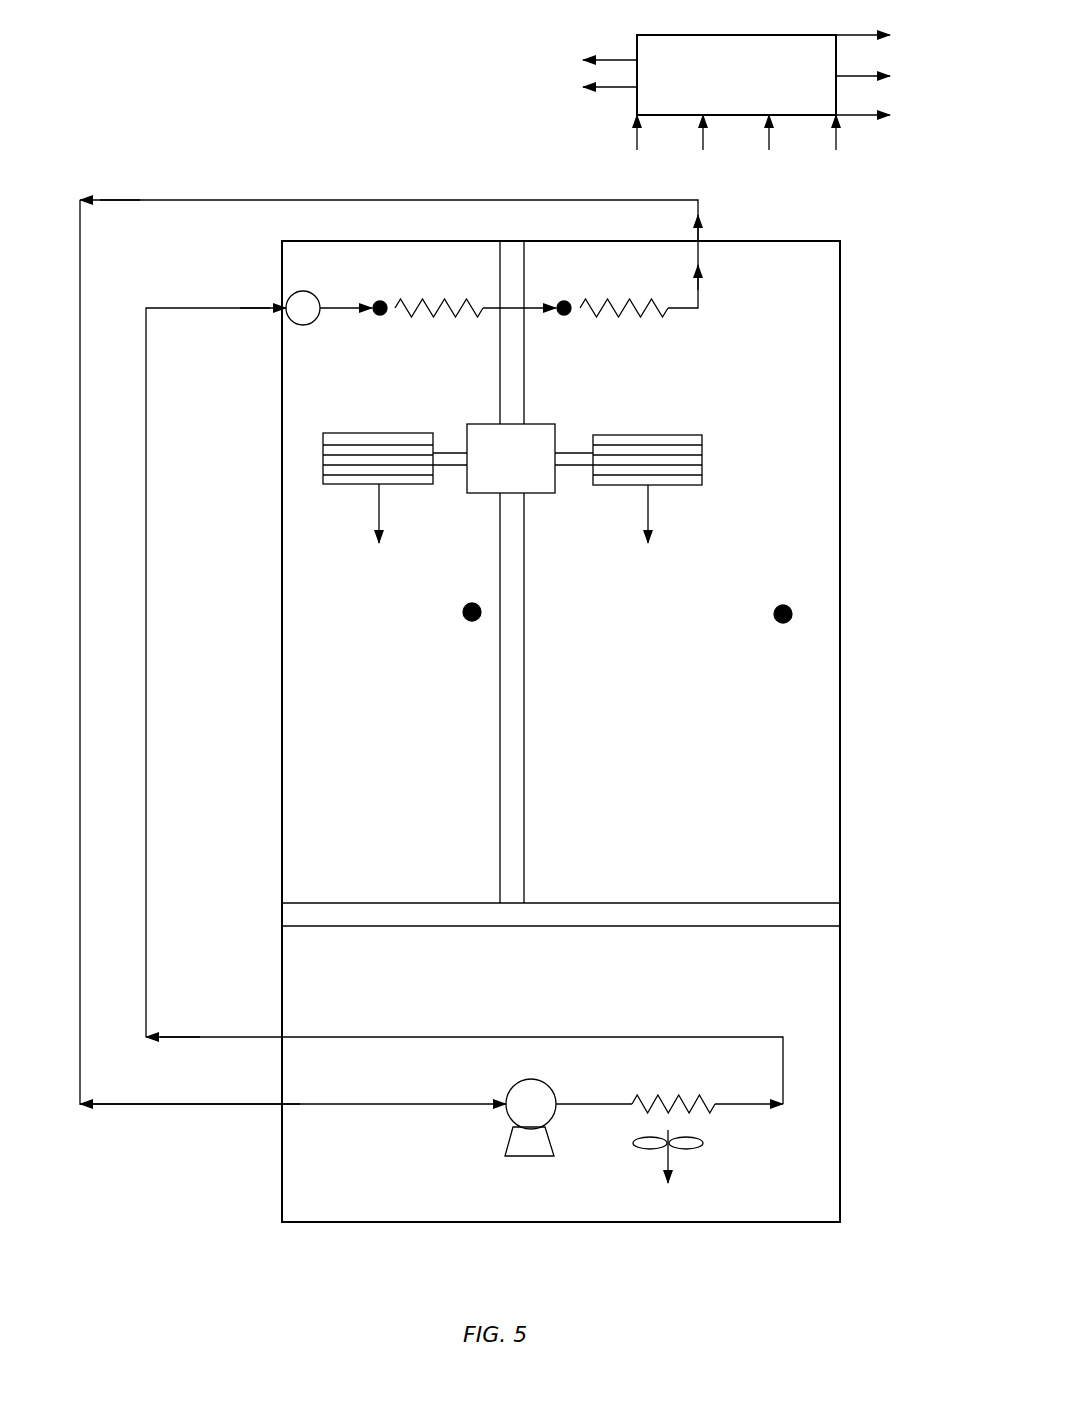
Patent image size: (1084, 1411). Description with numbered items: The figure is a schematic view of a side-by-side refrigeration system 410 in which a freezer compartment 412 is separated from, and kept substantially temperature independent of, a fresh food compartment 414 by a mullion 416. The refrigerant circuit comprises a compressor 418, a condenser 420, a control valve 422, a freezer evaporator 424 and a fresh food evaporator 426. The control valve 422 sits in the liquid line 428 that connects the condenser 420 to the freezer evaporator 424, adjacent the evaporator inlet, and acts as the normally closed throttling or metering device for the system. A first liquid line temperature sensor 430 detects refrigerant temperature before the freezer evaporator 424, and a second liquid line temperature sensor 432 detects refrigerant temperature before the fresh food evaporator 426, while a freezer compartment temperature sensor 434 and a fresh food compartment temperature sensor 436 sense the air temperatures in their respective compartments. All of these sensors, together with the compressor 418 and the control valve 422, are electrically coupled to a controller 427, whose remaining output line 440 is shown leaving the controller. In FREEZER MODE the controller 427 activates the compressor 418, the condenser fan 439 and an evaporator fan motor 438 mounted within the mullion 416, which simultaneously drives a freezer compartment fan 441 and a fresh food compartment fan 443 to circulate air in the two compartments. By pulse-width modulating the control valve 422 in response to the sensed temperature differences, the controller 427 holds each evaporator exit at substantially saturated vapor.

The side-by-side refrigeration system 410 is at (197, 141).
The freezer compartment 412 is at (370, 700).
The fresh food compartment 414 is at (658, 700).
The mullion 416 is at (500, 748).
The compressor 418 is at (358, 615).
The condenser 420 is at (637, 1102).
The control valve 422 is at (288, 298).
The freezer evaporator 424 is at (450, 316).
The fresh food evaporator 426 is at (630, 318).
The controller 427 is at (745, 35).
The liquid line 428 is at (147, 545).
The first liquid line temperature sensor 430 is at (378, 302).
The second liquid line temperature sensor 432 is at (572, 304).
The freezer compartment temperature sensor 434 is at (465, 607).
The fresh food compartment temperature sensor 436 is at (776, 606).
The evaporator fan motor 438 is at (886, 35).
The condenser fan 439 is at (640, 1148).
The controller output 440 is at (886, 115).
The freezer compartment fan 441 is at (380, 437).
The fresh food compartment fan 443 is at (665, 440).